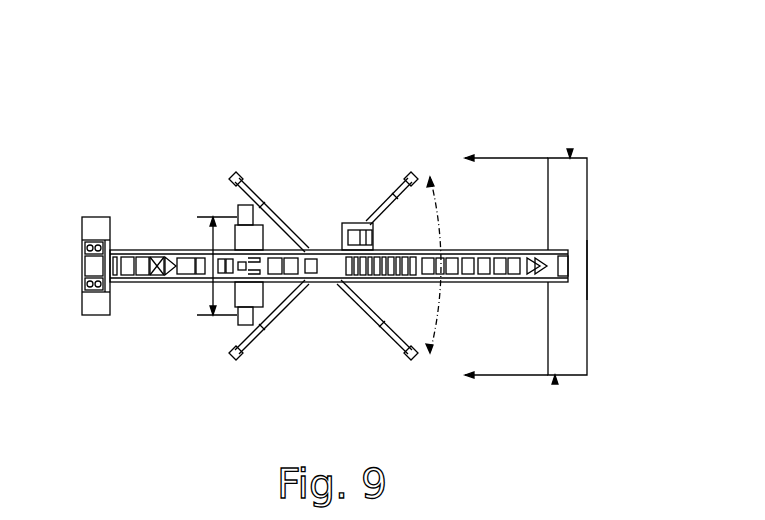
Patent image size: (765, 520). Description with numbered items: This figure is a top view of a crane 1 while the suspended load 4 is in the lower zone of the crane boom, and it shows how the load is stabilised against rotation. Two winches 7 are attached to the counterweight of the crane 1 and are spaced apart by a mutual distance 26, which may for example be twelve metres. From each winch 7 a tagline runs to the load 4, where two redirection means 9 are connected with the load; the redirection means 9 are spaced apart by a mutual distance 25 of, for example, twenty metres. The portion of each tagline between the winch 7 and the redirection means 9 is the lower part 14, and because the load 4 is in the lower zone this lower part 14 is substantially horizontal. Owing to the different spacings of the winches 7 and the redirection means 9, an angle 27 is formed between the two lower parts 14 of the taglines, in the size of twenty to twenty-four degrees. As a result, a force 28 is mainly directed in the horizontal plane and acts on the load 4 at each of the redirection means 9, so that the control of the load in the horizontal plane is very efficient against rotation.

The crane 1 is at (283, 358).
The load 4 is at (578, 190).
The winches 7 is at (238, 208).
The redirection means 9 is at (570, 150).
The lower part 14 is at (352, 222).
The mutual distance 25 is at (595, 268).
The mutual distance 26 is at (212, 236).
The angle 27 is at (445, 190).
The force 28 is at (515, 158).